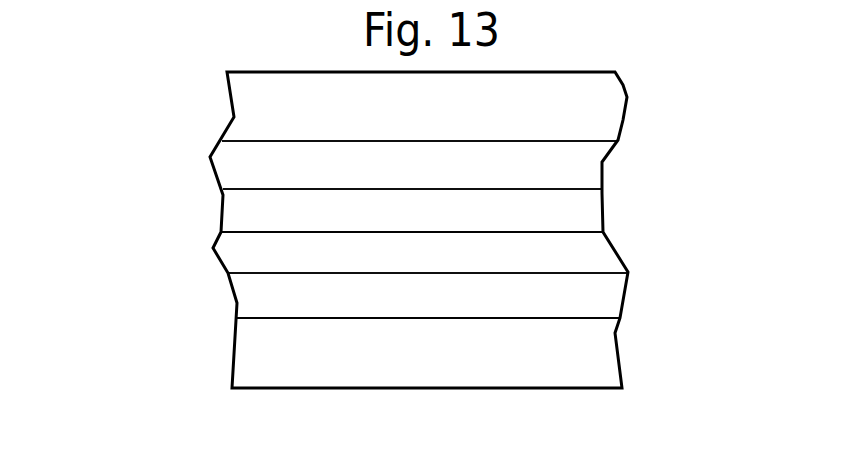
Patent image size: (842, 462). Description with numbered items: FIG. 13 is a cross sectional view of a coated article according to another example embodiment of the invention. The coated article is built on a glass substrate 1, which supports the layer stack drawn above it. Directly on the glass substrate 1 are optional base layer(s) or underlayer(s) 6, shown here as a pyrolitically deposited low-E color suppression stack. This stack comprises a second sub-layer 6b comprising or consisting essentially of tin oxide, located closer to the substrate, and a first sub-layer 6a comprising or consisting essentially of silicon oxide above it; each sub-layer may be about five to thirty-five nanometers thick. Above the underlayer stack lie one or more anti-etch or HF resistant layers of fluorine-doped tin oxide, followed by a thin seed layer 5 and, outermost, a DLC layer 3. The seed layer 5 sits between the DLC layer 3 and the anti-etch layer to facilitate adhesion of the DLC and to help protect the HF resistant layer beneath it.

The DLC layer 3 is at (608, 118).
The seed layer 5 is at (595, 173).
The first sub-layer 6a is at (605, 253).
The second sub-layer 6b is at (613, 302).
The base layer or underlayer 6 is at (193, 233).
The glass substrate 1 is at (608, 365).